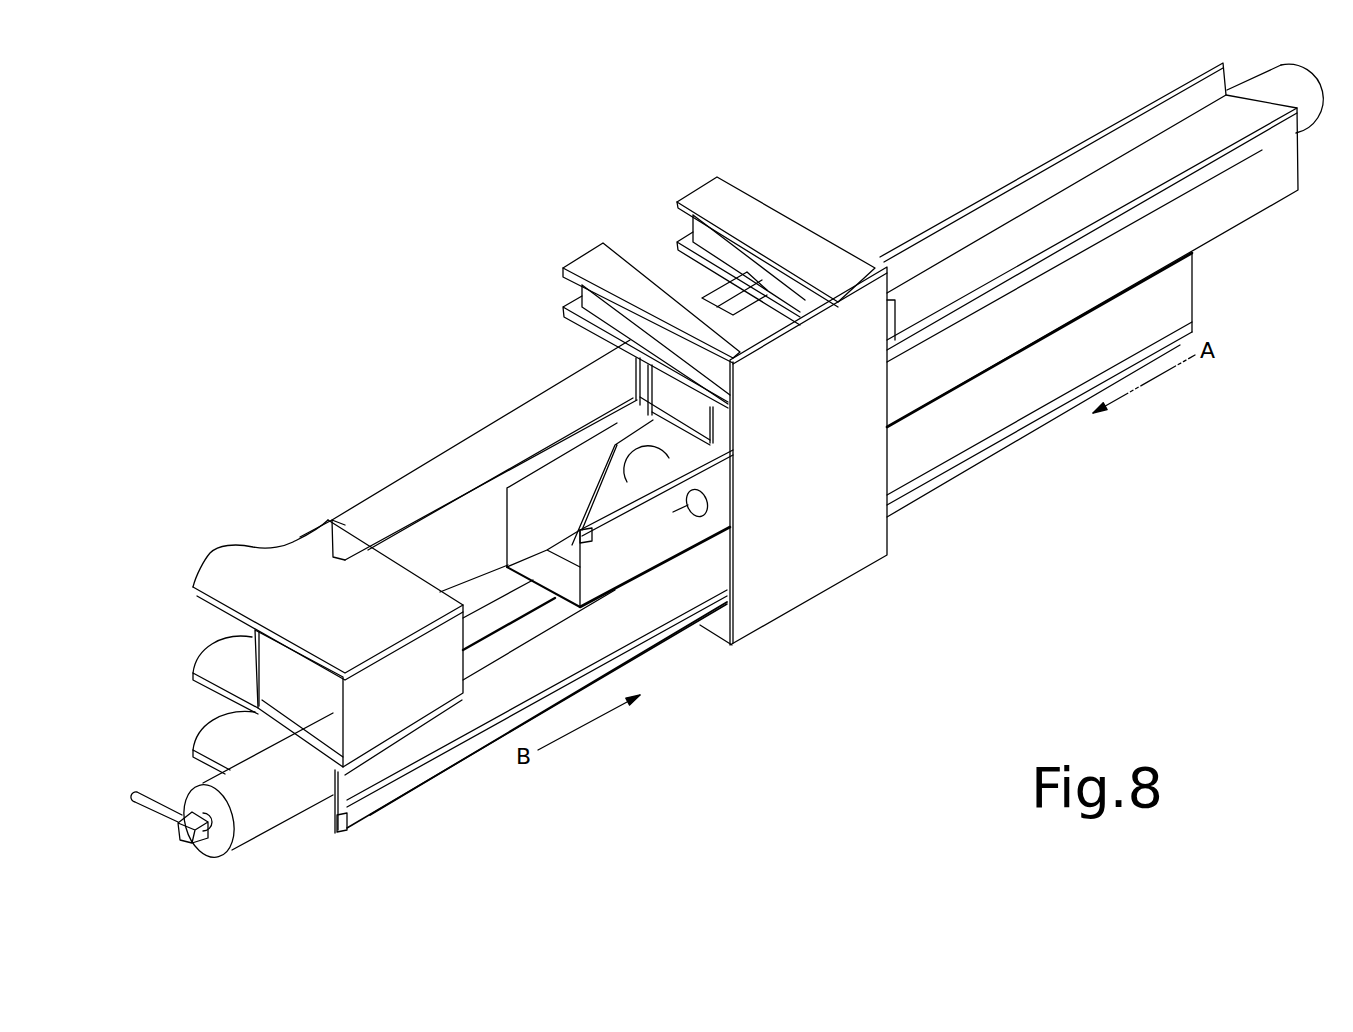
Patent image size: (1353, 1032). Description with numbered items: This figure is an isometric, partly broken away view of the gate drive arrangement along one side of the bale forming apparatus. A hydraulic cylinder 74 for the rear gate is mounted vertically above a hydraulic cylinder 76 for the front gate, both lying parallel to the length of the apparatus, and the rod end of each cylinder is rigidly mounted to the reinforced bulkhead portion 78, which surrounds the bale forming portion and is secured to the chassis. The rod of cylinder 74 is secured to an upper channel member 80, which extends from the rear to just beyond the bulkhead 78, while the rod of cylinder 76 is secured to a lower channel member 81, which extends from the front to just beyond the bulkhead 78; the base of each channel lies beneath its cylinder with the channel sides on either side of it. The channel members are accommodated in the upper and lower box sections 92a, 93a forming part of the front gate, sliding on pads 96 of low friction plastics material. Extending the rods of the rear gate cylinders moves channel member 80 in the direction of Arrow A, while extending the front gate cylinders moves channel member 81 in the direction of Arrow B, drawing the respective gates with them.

The hydraulic cylinder 74 is at (1053, 178).
The upper channel member 80 is at (1105, 245).
The lower channel member 81 is at (1039, 419).
The reinforced bulkhead portion 78 is at (848, 471).
The pad 96 is at (468, 471).
The upper box section 92a is at (292, 647).
The lower box section 93a is at (528, 705).
The hydraulic cylinder 76 is at (255, 811).